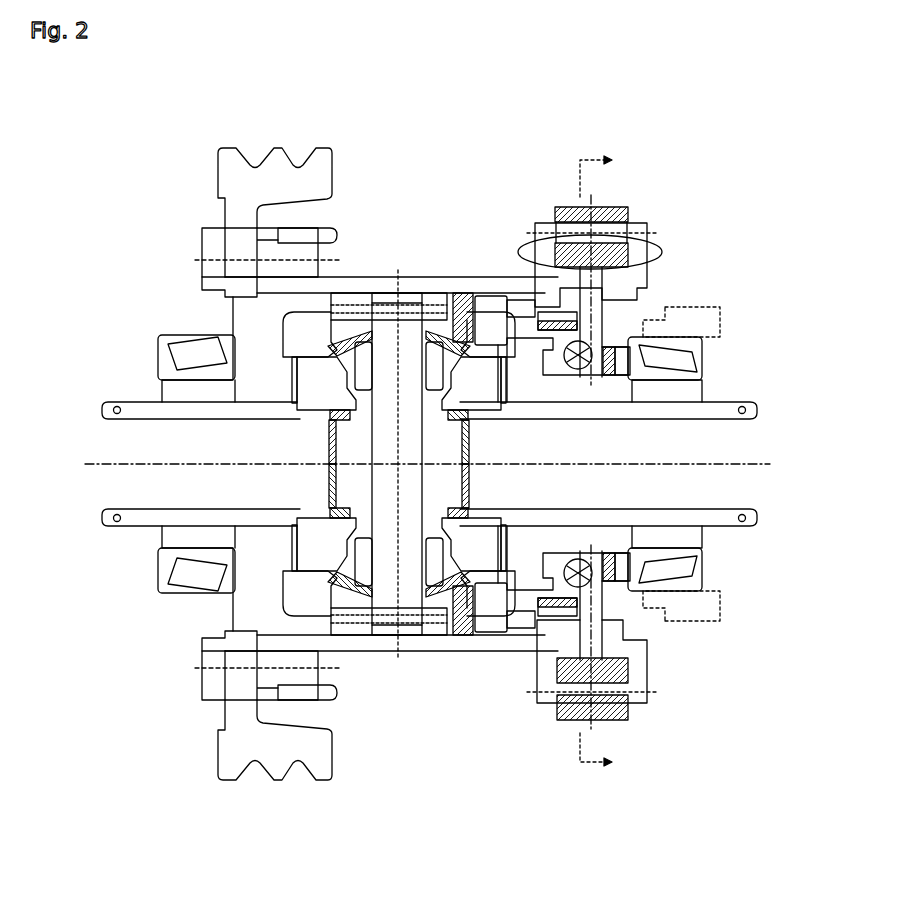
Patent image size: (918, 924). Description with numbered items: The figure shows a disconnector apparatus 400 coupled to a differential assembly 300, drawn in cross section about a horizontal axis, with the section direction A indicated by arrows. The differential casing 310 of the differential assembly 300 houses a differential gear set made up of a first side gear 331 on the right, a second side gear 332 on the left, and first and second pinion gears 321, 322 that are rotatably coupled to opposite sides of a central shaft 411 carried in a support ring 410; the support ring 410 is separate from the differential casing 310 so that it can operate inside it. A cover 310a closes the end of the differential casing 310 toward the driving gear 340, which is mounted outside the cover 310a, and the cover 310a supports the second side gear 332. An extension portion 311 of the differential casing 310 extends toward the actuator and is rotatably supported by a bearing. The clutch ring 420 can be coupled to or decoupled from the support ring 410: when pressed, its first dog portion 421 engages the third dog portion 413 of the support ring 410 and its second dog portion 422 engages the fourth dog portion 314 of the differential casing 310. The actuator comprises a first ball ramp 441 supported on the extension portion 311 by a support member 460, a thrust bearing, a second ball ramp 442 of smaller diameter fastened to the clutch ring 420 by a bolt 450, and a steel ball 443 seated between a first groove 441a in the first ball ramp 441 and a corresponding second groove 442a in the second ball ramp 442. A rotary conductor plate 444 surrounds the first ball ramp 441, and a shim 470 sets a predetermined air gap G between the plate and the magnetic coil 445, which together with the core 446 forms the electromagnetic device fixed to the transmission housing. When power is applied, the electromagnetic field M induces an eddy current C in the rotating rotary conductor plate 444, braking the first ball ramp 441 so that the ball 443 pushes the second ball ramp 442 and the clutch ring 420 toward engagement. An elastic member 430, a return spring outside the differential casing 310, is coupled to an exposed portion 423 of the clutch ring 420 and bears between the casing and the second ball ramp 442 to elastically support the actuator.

The differential assembly 300 is at (330, 253).
The differential casing 310 is at (309, 684).
The cover 310a is at (253, 595).
The extension portion 311 is at (690, 377).
The fourth dog portion 314 is at (482, 633).
The first pinion gear 321 is at (353, 352).
The second pinion gear 322 is at (327, 578).
The first side gear 331 is at (447, 373).
The second side gear 332 is at (327, 377).
The driving gear 340 is at (278, 160).
The disconnector apparatus 400 is at (643, 427).
The support ring 410 is at (440, 617).
The central shaft 411 is at (408, 333).
The third dog portion 413 is at (468, 630).
The clutch ring 420 is at (630, 661).
The first dog portion 421 is at (495, 620).
The second dog portion 422 is at (528, 615).
The exposed portion 423 is at (580, 713).
The elastic member 430 is at (627, 680).
The first ball ramp 441 is at (620, 327).
The first groove 441a is at (587, 553).
The second ball ramp 442 is at (560, 313).
The second groove 442a is at (640, 580).
The ball 443 is at (643, 333).
The rotary conductor plate 444 is at (620, 310).
The magnetic coil 445 is at (633, 210).
The core 446 is at (648, 227).
The bolt 450 is at (517, 300).
The support member 460 is at (640, 347).
The shim 470 is at (667, 347).
The air gap G is at (553, 260).
The eddy current C is at (582, 190).
The electromagnetic field M is at (527, 247).
The section line A is at (606, 462).